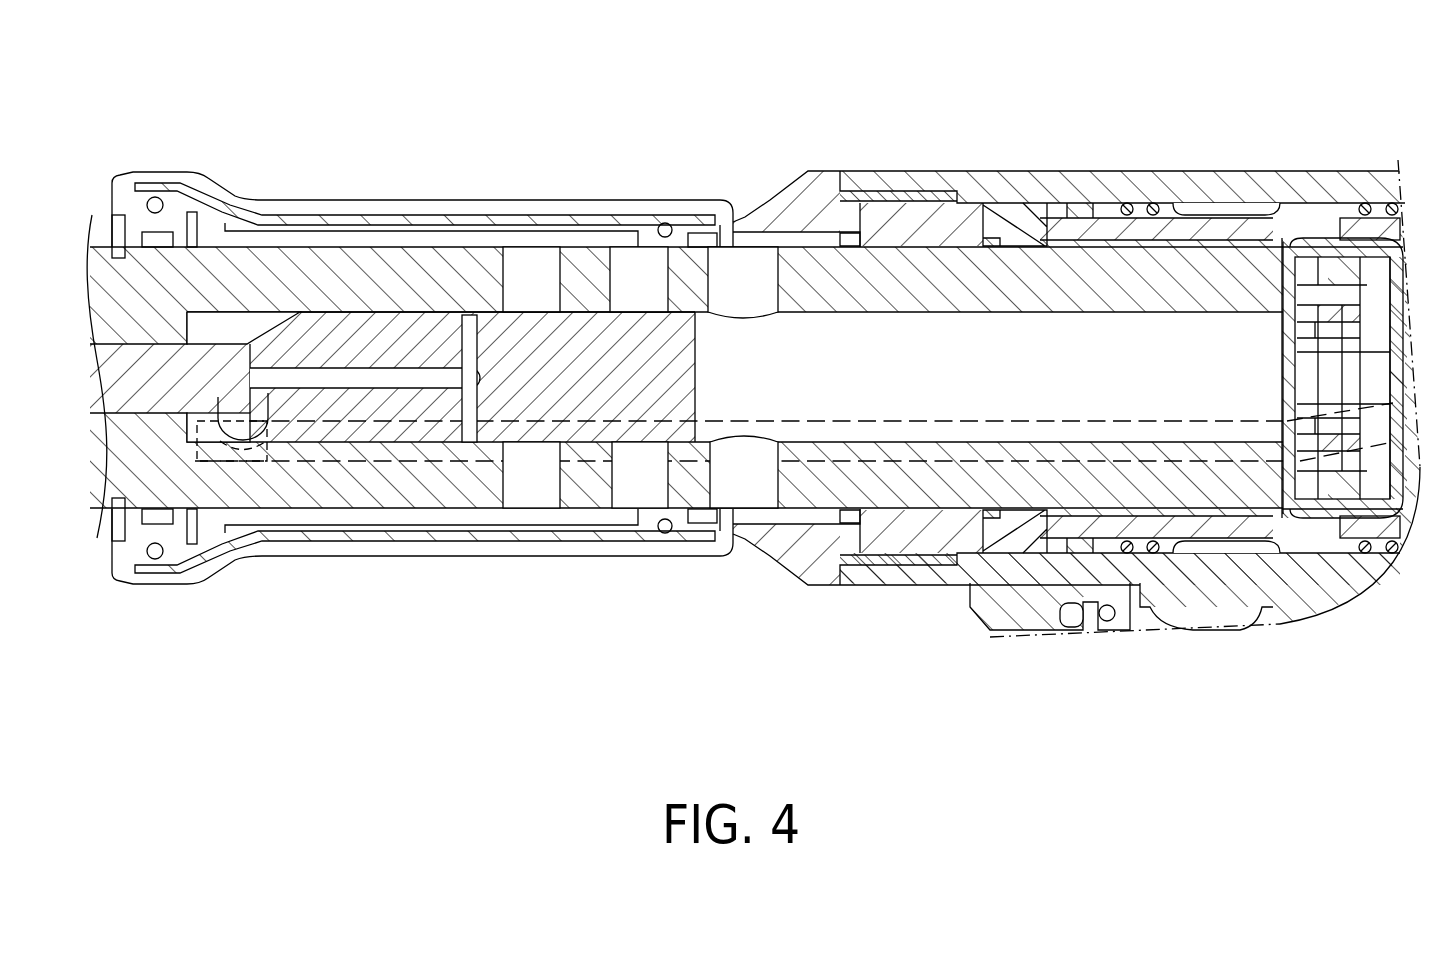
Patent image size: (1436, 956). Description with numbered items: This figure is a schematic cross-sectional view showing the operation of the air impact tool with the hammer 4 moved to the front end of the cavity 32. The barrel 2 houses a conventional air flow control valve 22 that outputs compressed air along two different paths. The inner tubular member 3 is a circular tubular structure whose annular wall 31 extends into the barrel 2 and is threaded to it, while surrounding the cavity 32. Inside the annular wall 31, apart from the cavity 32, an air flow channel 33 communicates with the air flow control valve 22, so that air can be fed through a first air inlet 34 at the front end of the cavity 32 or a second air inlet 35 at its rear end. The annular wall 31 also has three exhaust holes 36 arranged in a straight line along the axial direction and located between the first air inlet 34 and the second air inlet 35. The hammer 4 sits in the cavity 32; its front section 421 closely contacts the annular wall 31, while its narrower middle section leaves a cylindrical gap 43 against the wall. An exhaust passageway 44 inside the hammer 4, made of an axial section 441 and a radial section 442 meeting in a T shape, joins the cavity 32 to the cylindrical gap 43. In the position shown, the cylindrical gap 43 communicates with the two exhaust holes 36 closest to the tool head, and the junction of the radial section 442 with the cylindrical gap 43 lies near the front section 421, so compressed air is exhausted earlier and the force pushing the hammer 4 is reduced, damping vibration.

The barrel 2 is at (1217, 223).
The air flow control valve 22 is at (1332, 263).
The inner tubular member 3 is at (1047, 93).
The annular wall 31 is at (1027, 282).
The cavity 32 is at (973, 352).
The air flow channel 33 is at (752, 455).
The first air inlet 34 is at (240, 405).
The second air inlet 35 is at (1273, 377).
The exhaust hole 36 is at (523, 285).
The hammer 4 is at (392, 396).
The front section 421 is at (375, 328).
The cylindrical gap 43 is at (489, 312).
The exhaust passageway 44 is at (367, 492).
The axial section 441 is at (366, 388).
The radial section 442 is at (468, 430).